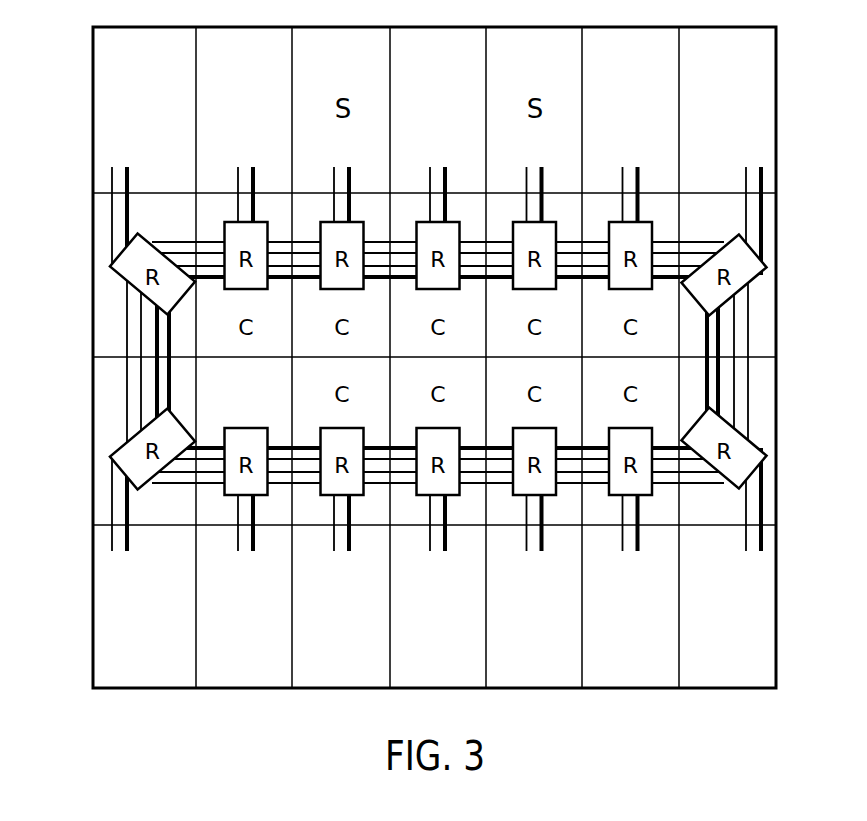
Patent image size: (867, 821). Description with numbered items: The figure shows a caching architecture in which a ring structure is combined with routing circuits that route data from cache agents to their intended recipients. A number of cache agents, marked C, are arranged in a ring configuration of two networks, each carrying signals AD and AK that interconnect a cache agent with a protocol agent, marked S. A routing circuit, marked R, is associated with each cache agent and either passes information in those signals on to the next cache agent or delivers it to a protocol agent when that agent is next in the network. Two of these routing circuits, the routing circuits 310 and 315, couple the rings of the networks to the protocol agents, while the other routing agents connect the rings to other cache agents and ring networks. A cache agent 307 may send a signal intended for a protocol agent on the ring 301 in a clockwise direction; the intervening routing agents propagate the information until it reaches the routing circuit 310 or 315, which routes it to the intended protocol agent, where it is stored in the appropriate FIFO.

The ring 301 is at (190, 486).
The cache agent 307 is at (212, 393).
The routing circuit 310 is at (310, 232).
The routing circuit 315 is at (563, 232).